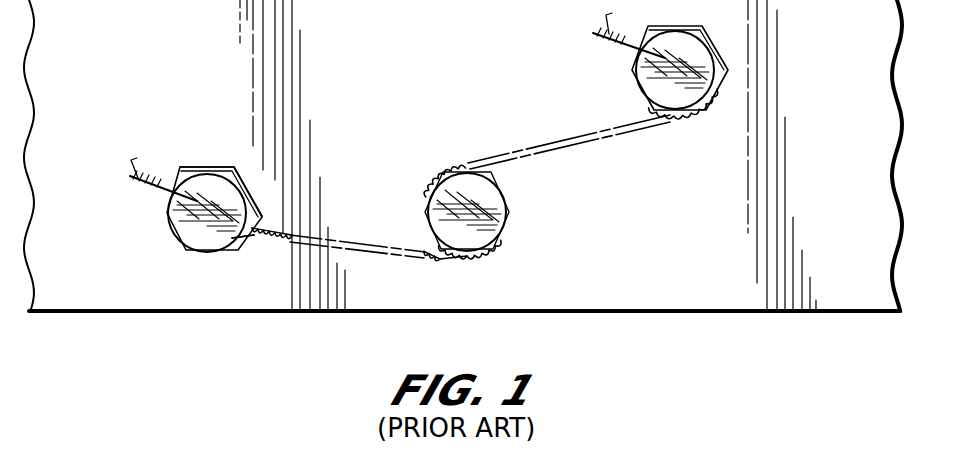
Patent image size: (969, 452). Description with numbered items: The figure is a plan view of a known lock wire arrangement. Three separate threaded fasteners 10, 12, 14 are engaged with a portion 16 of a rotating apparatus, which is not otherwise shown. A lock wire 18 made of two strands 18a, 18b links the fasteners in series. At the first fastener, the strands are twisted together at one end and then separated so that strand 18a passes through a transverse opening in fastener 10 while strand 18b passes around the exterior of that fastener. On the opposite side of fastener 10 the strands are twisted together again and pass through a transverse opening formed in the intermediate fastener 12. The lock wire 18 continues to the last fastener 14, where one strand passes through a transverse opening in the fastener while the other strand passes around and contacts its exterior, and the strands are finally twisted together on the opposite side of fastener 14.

The threaded fastener 10 is at (186, 234).
The threaded fastener 12 is at (500, 197).
The threaded fastener 14 is at (631, 82).
The portion of the rotating apparatus 16 is at (650, 285).
The lock wire 18 is at (485, 174).
The strand 18a is at (249, 239).
The strand 18b is at (219, 168).